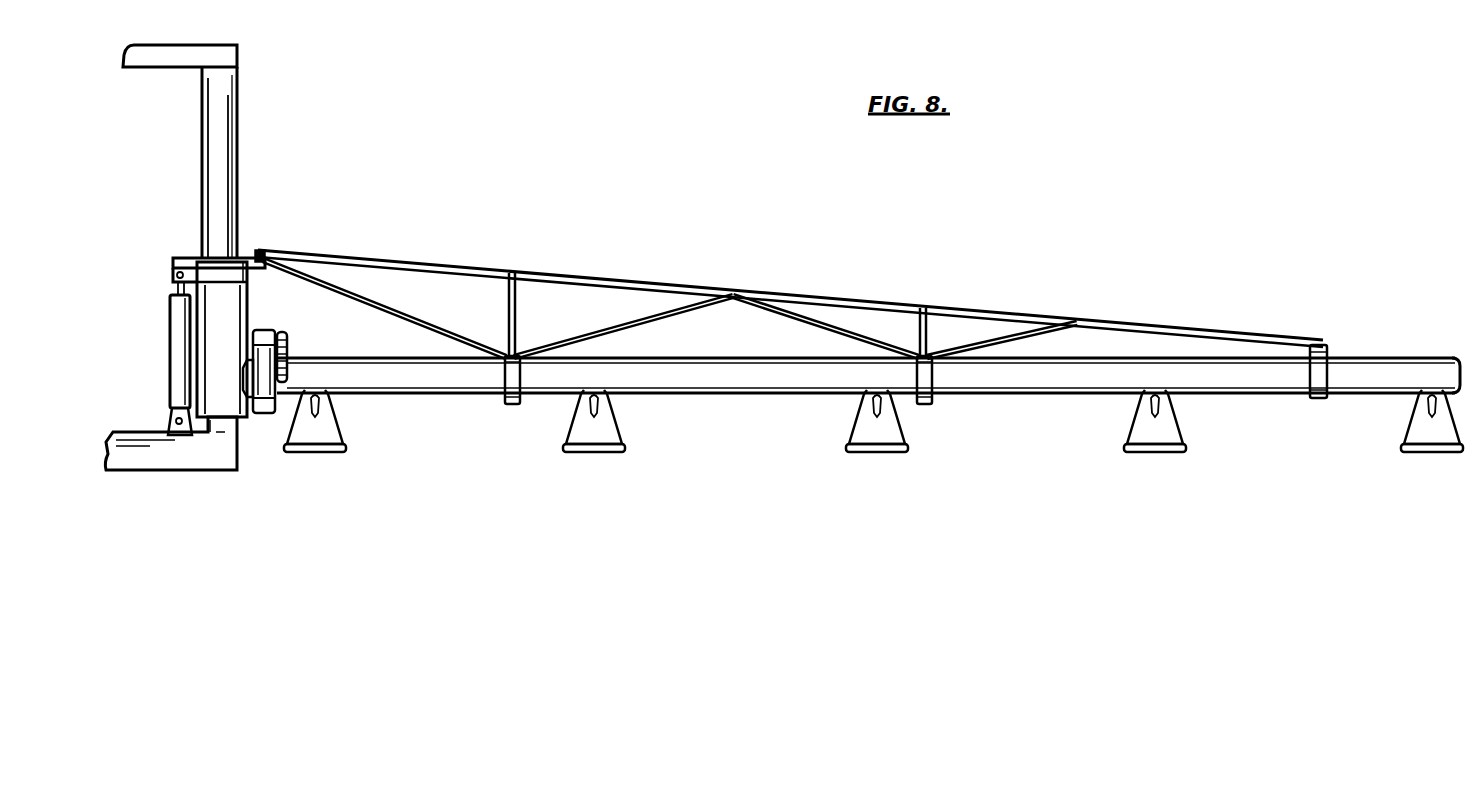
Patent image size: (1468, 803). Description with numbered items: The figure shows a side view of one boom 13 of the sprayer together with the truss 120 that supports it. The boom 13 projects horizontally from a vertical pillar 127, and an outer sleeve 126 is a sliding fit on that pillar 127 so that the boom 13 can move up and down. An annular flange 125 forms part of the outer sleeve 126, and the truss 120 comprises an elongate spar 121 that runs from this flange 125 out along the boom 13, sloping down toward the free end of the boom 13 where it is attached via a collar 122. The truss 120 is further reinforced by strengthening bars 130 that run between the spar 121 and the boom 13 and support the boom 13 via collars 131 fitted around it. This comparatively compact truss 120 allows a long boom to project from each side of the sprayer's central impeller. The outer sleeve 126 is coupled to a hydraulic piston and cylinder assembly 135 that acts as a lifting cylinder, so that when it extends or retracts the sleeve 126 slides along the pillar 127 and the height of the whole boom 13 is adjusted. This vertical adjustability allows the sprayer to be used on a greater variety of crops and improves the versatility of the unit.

The boom 13 is at (773, 375).
The truss 120 is at (821, 339).
The elongate spar 121 is at (498, 272).
The collar 122 is at (1320, 366).
The annular flange 125 is at (243, 258).
The outer sleeve 126 is at (222, 326).
The vertical pillar 127 is at (222, 158).
The strengthening bars 130 is at (435, 327).
The collars 131 is at (506, 380).
The hydraulic piston and cylinder assembly 135 is at (183, 323).